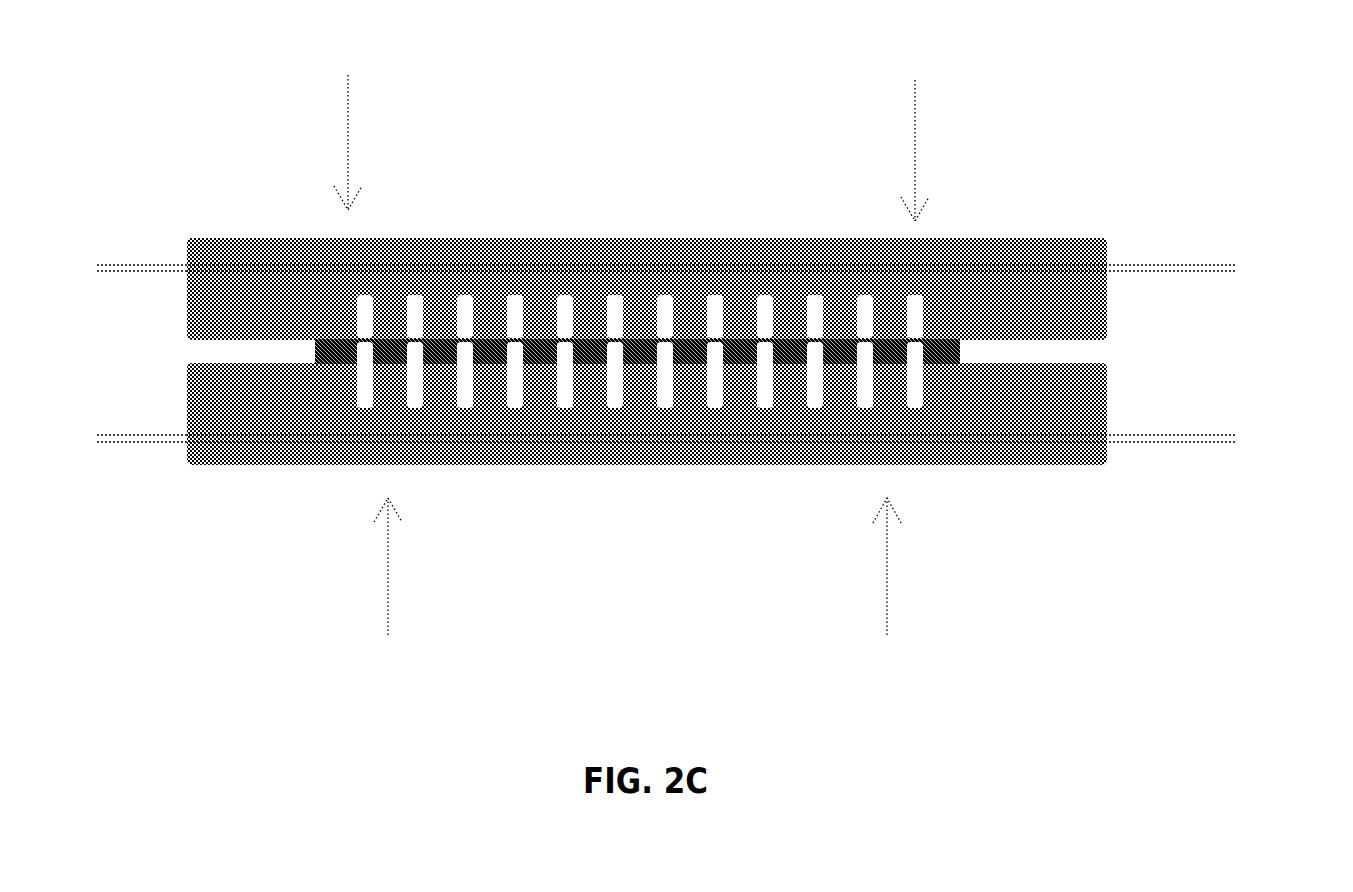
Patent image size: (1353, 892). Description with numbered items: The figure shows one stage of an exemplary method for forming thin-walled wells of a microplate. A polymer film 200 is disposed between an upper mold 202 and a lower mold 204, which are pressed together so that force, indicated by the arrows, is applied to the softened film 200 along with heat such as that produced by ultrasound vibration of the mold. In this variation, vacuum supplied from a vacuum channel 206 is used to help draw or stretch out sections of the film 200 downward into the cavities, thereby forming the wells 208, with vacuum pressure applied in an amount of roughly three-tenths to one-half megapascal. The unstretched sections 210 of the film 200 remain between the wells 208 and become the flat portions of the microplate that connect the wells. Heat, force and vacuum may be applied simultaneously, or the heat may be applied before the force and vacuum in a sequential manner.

The polymer film 200 is at (943, 348).
The upper mold 202 is at (225, 248).
The lower mold 204 is at (227, 453).
The vacuum channel 206 is at (1242, 435).
The wells 208 is at (617, 402).
The unstretched sections 210 is at (484, 338).